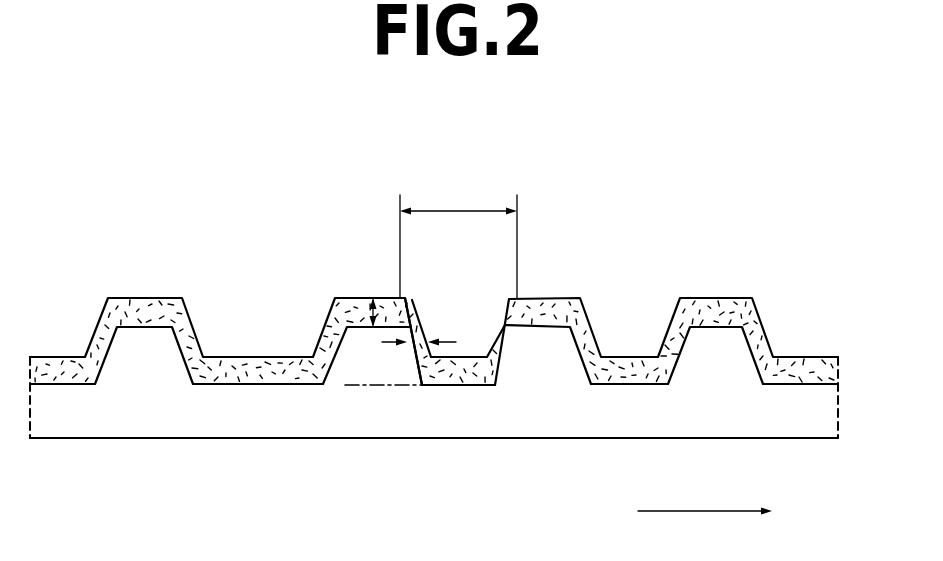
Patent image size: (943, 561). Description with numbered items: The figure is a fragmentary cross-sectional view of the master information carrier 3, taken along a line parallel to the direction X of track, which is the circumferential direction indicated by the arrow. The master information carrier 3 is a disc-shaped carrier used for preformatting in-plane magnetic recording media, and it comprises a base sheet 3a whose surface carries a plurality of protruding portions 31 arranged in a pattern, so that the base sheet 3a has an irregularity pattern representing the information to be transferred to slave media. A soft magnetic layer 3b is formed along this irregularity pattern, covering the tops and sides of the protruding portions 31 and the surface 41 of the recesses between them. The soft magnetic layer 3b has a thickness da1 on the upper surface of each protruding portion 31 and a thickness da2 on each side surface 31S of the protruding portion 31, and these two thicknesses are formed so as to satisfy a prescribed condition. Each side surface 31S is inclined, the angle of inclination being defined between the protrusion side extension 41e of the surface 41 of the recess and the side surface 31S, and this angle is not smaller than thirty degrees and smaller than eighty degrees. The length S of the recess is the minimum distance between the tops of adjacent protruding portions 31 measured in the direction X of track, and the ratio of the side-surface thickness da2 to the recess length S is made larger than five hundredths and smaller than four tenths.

The master information carrier 3 is at (113, 184).
The base sheet 3a is at (812, 436).
The soft magnetic layer 3b is at (812, 360).
The protruding portion 31 is at (157, 308).
The side surface of the protruding portion 31S is at (413, 300).
The surface of the recess 41 is at (474, 376).
The protrusion side extension of the recess surface 41e is at (383, 386).
The thickness of the soft magnetic layer on the upper surface of the protruding port da1 is at (383, 298).
The thickness of the soft magnetic layer on the side surface of the protruding porti da2 is at (440, 342).
The length of the recess S is at (452, 210).
The direction of track X is at (705, 530).